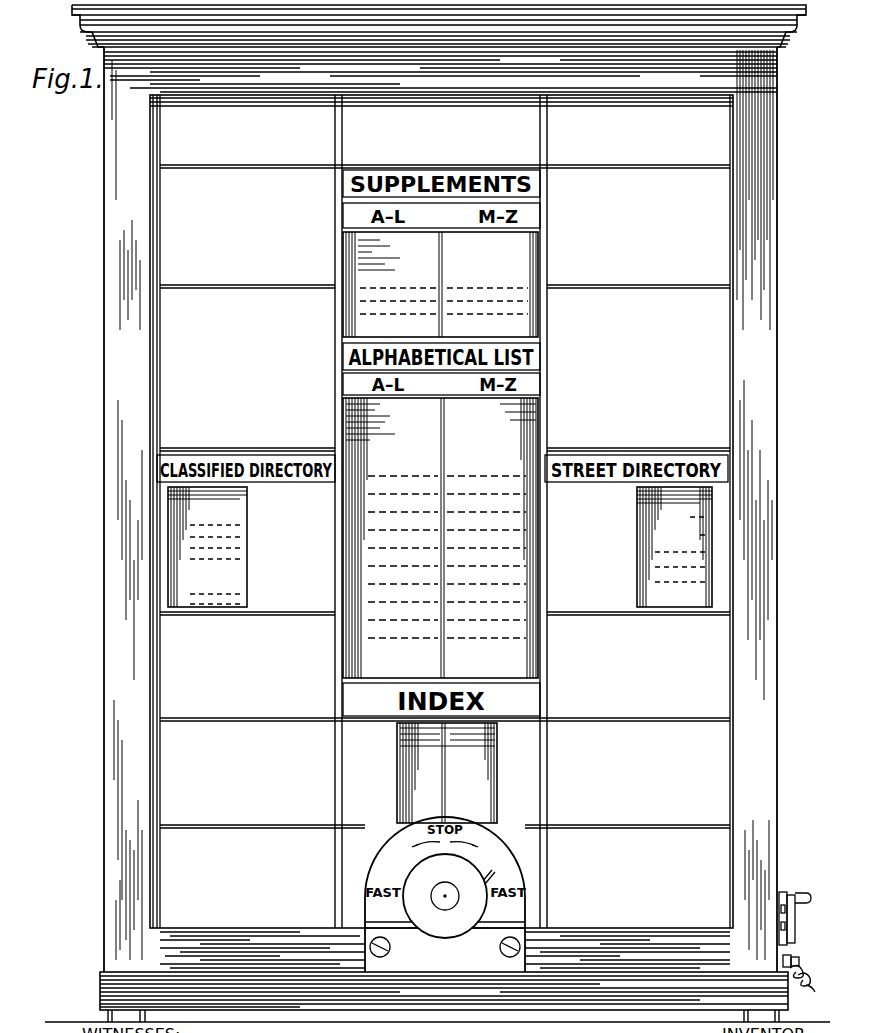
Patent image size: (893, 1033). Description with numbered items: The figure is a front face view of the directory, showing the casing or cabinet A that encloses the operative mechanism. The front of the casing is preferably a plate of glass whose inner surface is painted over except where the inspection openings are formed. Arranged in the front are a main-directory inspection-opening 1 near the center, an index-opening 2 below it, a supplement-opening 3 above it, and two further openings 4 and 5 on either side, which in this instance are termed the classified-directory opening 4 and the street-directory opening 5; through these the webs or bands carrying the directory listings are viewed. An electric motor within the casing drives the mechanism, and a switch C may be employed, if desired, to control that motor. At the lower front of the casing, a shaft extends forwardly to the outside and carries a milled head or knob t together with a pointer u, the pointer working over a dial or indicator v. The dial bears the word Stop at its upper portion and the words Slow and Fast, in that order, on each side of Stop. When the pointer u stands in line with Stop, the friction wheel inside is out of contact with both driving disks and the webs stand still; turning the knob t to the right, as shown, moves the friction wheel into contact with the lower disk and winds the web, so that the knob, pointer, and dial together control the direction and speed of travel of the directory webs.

The casing or cabinet A is at (437, 513).
The main-directory inspection-opening 1 is at (343, 427).
The index-opening 2 is at (397, 756).
The supplement-opening 3 is at (343, 253).
The classified-directory opening 4 is at (247, 568).
The street-directory opening 5 is at (640, 530).
The milled head or knob t is at (445, 896).
The pointer u is at (502, 874).
The dial or indicator v is at (377, 851).
The switch C is at (797, 942).